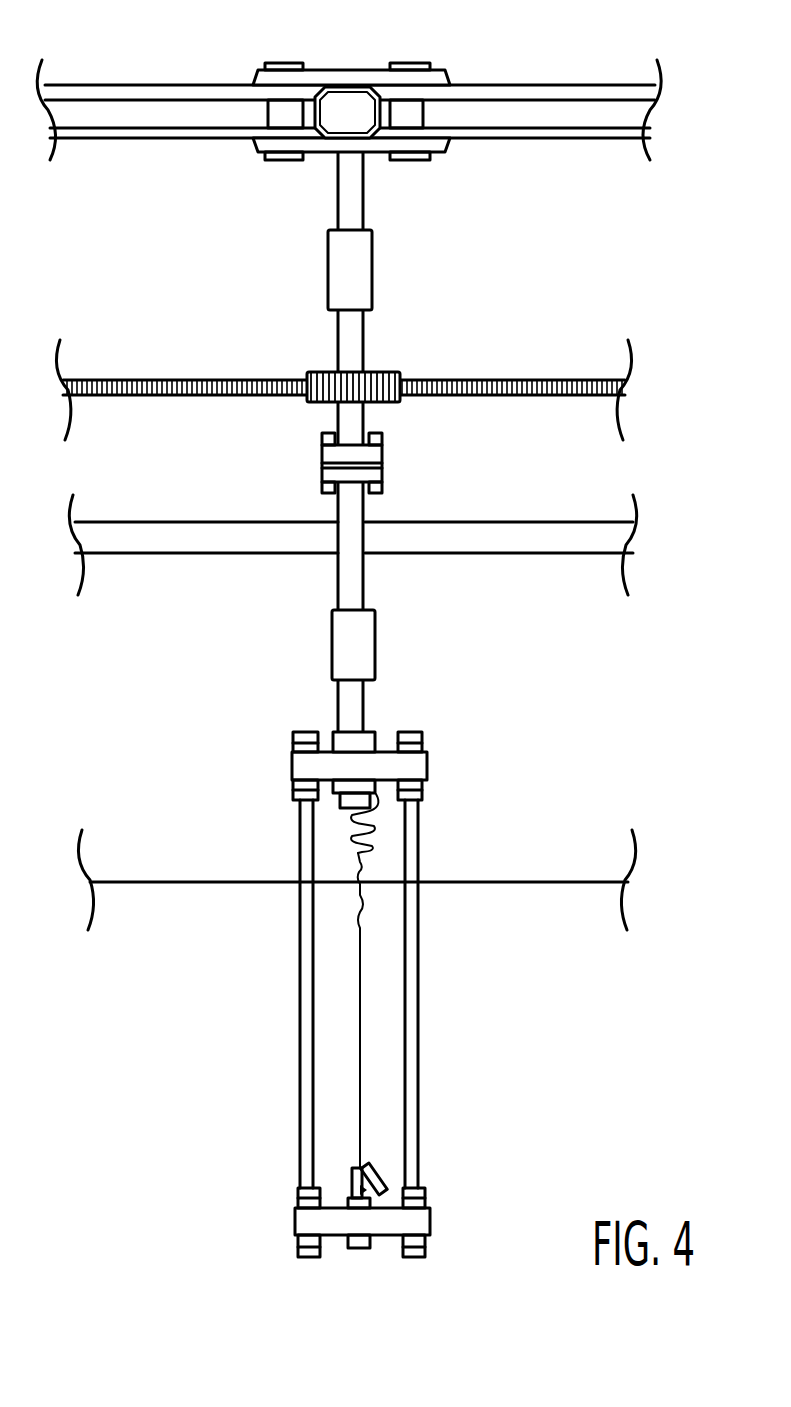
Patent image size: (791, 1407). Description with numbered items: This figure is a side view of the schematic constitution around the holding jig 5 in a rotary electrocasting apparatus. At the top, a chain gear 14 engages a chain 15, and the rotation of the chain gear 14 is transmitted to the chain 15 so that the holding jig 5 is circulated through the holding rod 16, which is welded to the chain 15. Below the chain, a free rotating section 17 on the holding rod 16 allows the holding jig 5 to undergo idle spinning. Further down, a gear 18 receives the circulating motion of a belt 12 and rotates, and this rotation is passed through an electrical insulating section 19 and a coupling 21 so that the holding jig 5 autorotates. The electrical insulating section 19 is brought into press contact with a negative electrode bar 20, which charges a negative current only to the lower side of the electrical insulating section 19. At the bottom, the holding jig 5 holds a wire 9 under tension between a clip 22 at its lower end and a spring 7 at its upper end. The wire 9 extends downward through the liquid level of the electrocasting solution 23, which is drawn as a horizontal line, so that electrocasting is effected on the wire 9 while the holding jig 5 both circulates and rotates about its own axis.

The holding jig 5 is at (431, 765).
The spring 7 is at (370, 838).
The wire 9 is at (368, 1033).
The belt 12 is at (520, 379).
The chain gear 14 is at (347, 100).
The chain 15 is at (527, 88).
The holding rod 16 is at (352, 202).
The free rotating section 17 is at (360, 272).
The gear 18 is at (378, 373).
The electrical insulating section 19 is at (375, 452).
The negative electrode bar 20 is at (452, 536).
The coupling 21 is at (366, 645).
The clip 22 is at (378, 1178).
The electrocasting solution 23 is at (585, 882).